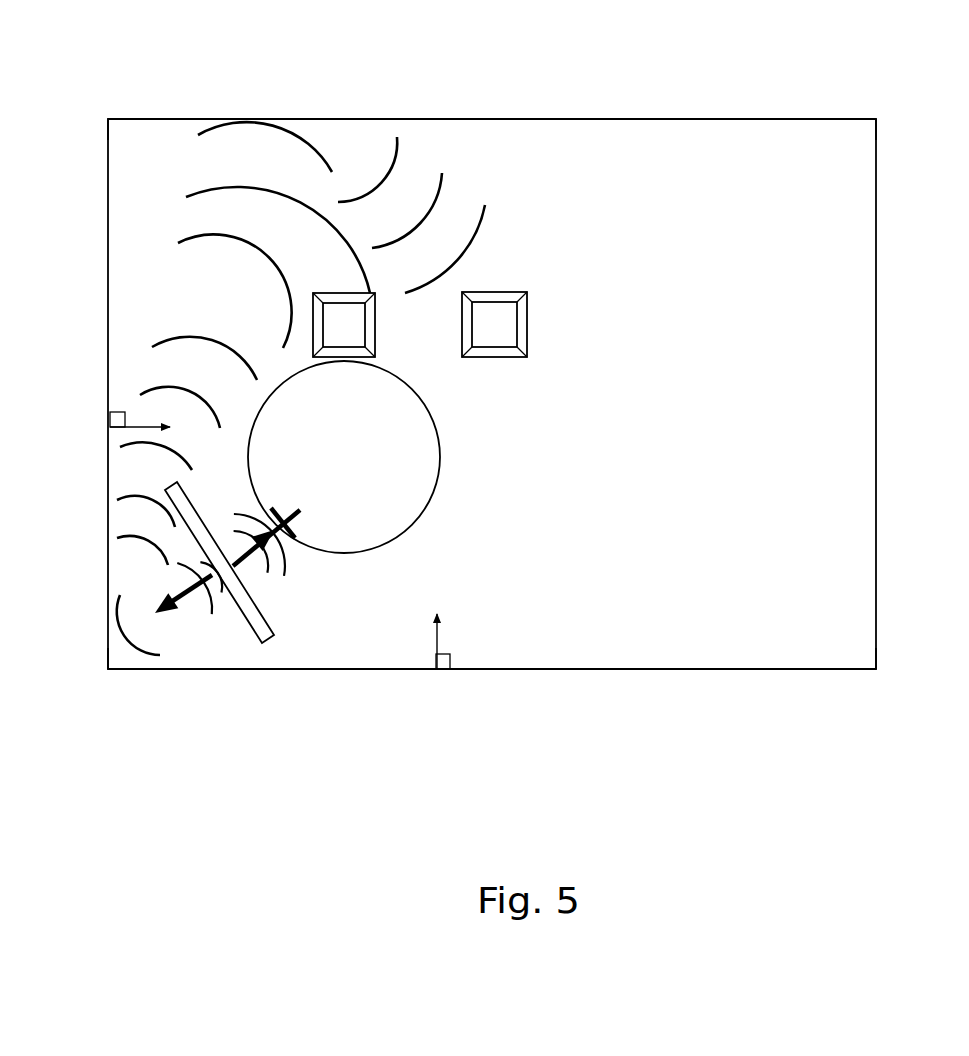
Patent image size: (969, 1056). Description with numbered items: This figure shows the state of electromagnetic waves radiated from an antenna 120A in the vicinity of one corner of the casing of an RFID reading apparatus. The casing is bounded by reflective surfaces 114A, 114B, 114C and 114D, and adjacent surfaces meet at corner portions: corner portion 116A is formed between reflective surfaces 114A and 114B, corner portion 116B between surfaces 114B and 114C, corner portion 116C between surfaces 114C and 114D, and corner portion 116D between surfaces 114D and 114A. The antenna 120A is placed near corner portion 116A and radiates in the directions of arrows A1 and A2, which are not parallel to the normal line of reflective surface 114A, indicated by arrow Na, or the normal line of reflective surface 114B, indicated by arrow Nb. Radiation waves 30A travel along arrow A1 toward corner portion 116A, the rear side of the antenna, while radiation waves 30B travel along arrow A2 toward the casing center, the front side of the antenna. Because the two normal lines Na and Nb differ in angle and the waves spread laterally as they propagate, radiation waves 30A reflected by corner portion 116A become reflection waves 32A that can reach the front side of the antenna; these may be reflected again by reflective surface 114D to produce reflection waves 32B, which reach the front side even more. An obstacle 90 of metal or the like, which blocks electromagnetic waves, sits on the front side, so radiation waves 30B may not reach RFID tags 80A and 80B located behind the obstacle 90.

The reflective surface 114A is at (116, 350).
The reflective surface 114B is at (506, 668).
The reflective surface 114C is at (874, 456).
The reflective surface 114D is at (492, 124).
The corner portion 116A is at (112, 666).
The corner portion 116B is at (872, 665).
The corner portion 116C is at (872, 122).
The corner portion 116D is at (113, 123).
The reflection waves 32A is at (168, 203).
The reflection waves 32B is at (420, 158).
The radiation waves 30A is at (130, 574).
The radiation waves 30B is at (289, 578).
The RFID tag 80A is at (529, 325).
The RFID tag 80B is at (377, 325).
The obstacle 90 is at (440, 455).
The antenna 120A is at (273, 645).
The arrow A1 is at (197, 612).
The arrow A2 is at (252, 576).
The arrow Na is at (156, 427).
The arrow Nb is at (456, 636).